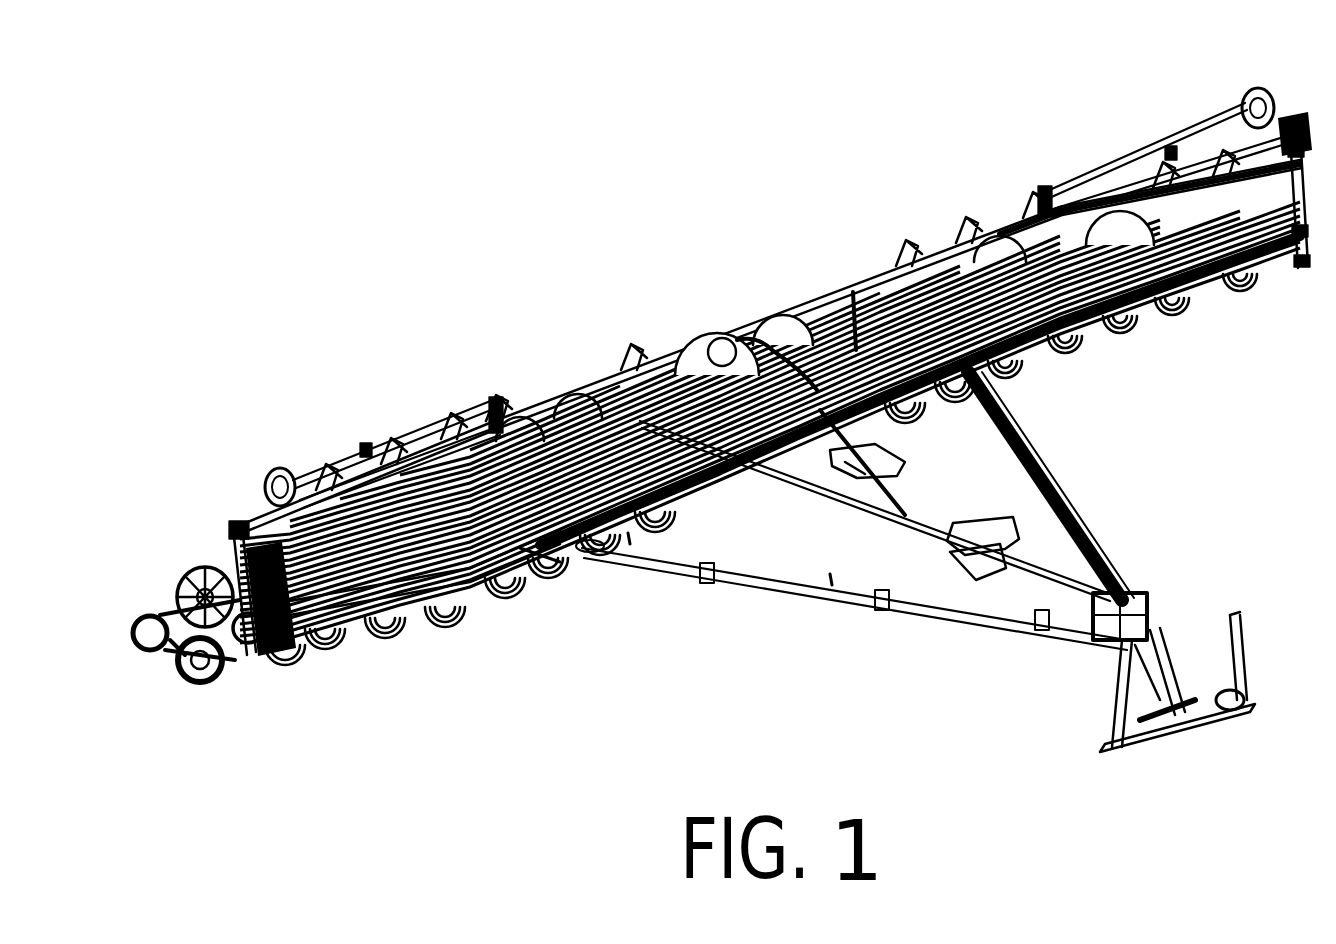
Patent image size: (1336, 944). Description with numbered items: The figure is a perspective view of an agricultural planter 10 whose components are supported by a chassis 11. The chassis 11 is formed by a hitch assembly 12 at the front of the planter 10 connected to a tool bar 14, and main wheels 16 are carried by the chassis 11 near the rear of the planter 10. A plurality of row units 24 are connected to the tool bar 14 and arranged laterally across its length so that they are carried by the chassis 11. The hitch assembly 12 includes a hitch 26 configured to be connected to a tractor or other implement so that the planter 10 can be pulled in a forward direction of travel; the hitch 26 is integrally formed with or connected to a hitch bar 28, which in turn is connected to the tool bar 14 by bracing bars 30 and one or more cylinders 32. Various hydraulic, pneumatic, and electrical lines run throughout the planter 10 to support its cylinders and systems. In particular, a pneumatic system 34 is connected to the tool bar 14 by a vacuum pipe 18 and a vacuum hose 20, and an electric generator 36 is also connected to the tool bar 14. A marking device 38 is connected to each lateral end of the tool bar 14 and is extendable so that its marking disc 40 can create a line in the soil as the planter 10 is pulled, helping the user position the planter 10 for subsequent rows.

The agricultural planter 10 is at (722, 418).
The chassis 11 is at (922, 585).
The hitch assembly 12 is at (1174, 686).
The tool bar 14 is at (505, 590).
The main wheels 16 is at (522, 420).
The vacuum pipe 18 is at (657, 447).
The vacuum hose 20 is at (538, 552).
The row units 24 is at (876, 325).
The hitch 26 is at (1186, 727).
The hitch bar 28 is at (993, 587).
The bracing bars 30 is at (1100, 552).
The cylinders 32 is at (800, 473).
The pneumatic system 34 is at (704, 344).
The electric generator 36 is at (1077, 307).
The marking device 38 is at (757, 273).
The marking disc 40 is at (277, 468).